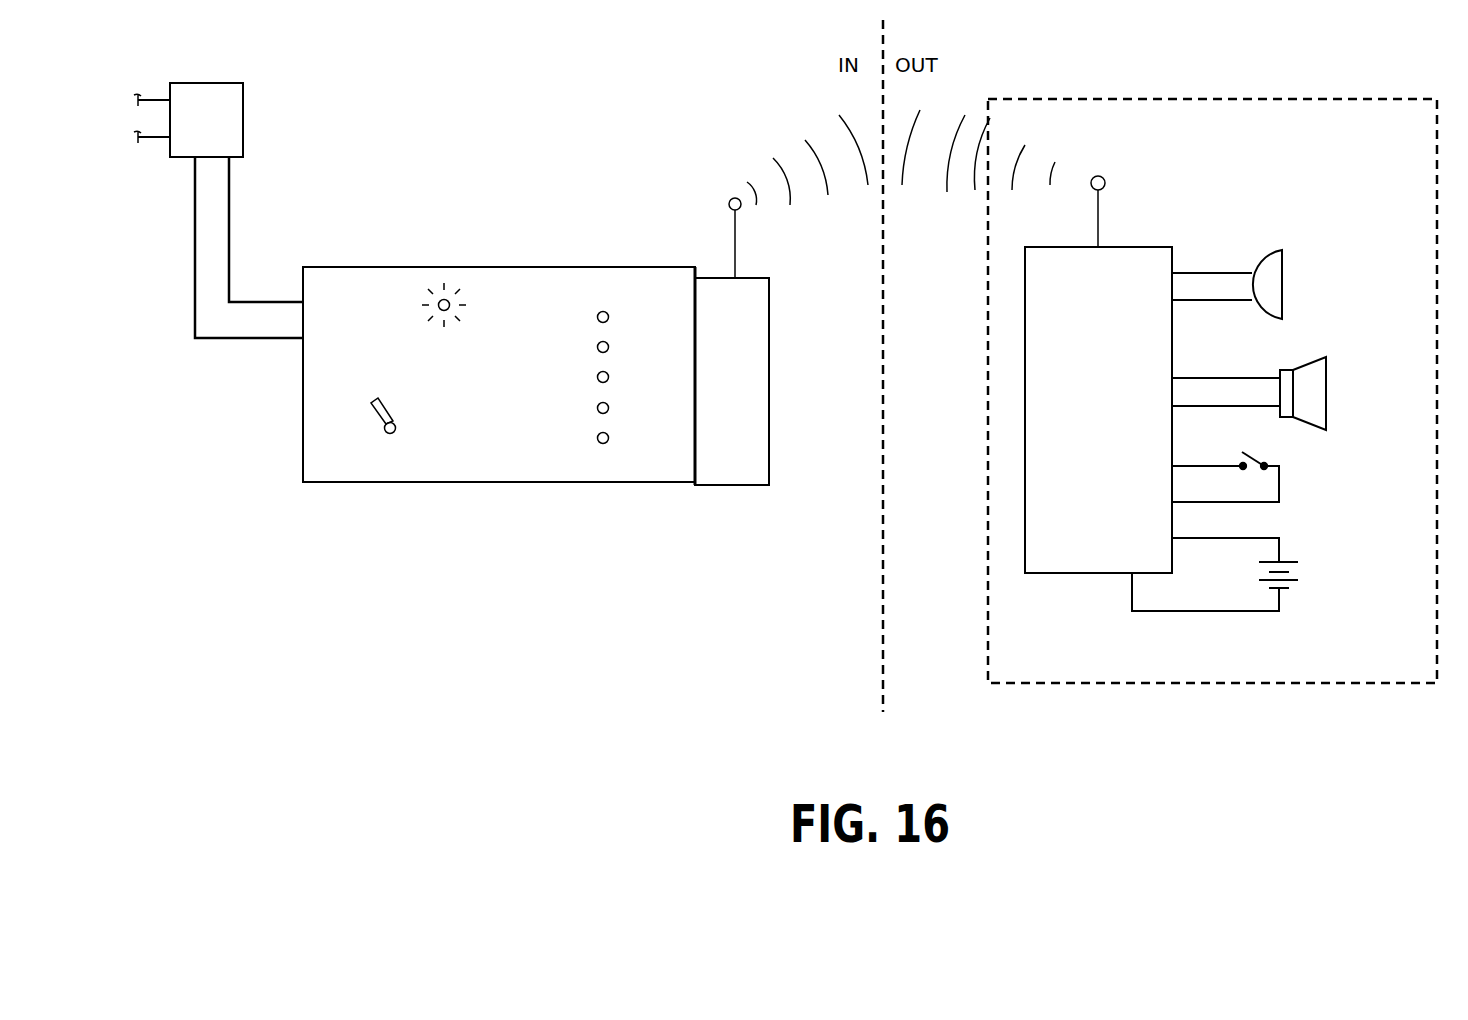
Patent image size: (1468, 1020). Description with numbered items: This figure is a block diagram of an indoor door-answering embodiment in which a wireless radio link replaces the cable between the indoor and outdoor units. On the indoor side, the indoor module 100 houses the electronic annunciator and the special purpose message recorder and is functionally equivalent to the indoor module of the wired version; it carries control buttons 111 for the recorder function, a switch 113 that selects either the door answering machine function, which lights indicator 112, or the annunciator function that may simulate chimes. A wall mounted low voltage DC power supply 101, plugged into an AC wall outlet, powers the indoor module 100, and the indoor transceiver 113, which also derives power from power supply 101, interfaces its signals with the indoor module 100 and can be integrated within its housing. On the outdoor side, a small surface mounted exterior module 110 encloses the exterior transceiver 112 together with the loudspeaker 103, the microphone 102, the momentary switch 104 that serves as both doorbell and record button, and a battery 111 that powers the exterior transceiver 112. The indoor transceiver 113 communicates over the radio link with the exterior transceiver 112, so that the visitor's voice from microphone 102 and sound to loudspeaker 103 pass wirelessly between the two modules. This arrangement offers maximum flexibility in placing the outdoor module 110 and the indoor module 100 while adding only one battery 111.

The indoor module 100 is at (645, 251).
The power supply 101 is at (263, 78).
The microphone 102 is at (1288, 268).
The loudspeaker 103 is at (1328, 382).
The momentary switch 104 is at (1282, 474).
The exterior module 110 is at (1310, 97).
The battery / control buttons 111 is at (597, 452).
The exterior transceiver / indicator 112 is at (452, 283).
The indoor transceiver / switch 113 is at (398, 432).